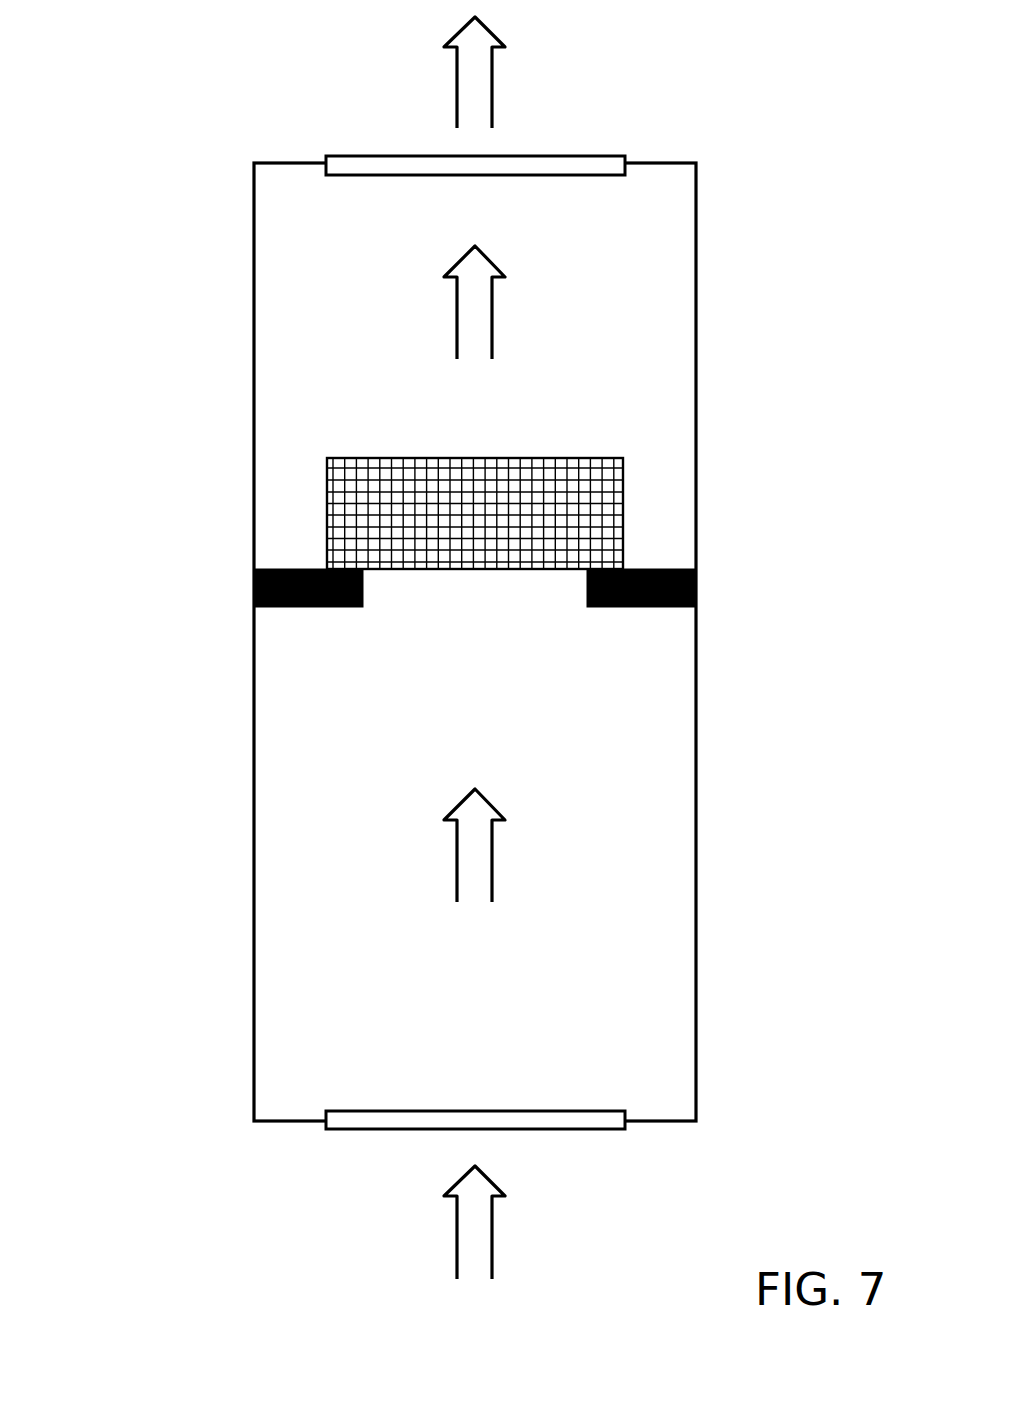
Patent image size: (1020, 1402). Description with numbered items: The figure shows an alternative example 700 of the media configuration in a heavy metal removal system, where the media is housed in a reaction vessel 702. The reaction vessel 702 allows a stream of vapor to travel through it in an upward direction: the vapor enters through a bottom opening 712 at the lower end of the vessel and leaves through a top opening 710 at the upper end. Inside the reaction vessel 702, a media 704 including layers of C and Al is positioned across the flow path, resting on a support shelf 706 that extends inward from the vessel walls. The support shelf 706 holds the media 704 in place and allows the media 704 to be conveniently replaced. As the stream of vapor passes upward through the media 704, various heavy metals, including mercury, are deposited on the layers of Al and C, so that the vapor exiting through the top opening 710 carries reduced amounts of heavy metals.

The alternative example of media configuration 700 is at (126, 86).
The reaction vessel 702 is at (254, 421).
The media 704 is at (327, 513).
The support shelf 706 is at (254, 587).
The top opening 710 is at (360, 156).
The bottom opening 712 is at (327, 1111).